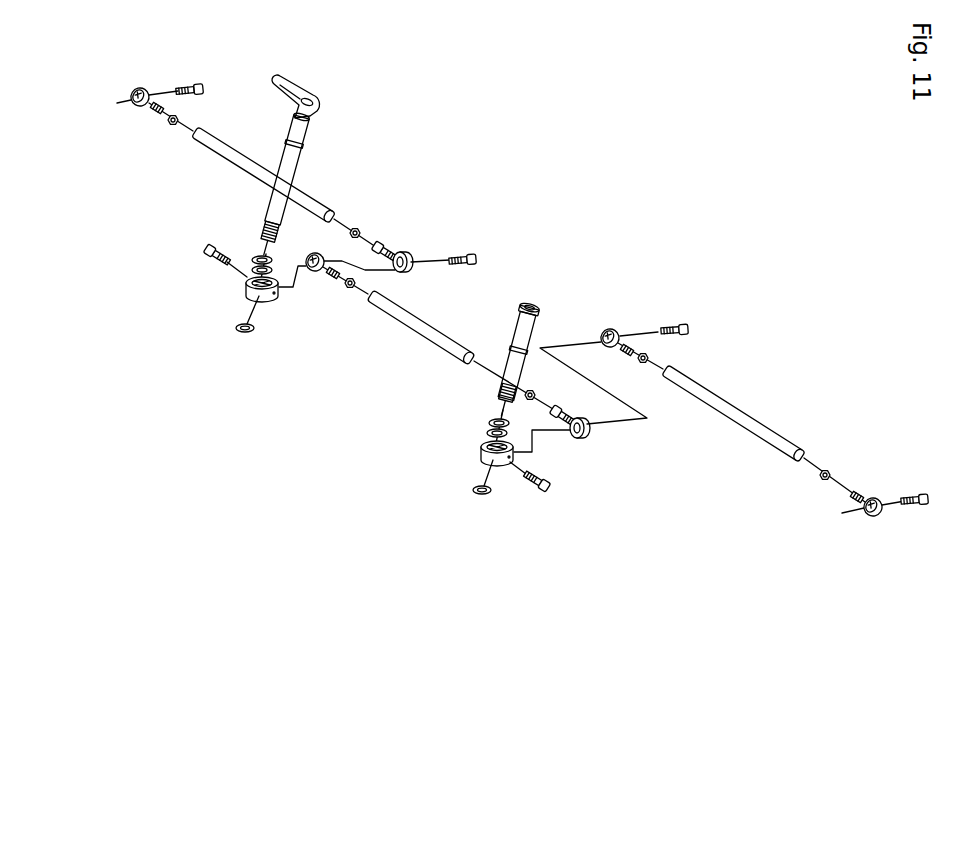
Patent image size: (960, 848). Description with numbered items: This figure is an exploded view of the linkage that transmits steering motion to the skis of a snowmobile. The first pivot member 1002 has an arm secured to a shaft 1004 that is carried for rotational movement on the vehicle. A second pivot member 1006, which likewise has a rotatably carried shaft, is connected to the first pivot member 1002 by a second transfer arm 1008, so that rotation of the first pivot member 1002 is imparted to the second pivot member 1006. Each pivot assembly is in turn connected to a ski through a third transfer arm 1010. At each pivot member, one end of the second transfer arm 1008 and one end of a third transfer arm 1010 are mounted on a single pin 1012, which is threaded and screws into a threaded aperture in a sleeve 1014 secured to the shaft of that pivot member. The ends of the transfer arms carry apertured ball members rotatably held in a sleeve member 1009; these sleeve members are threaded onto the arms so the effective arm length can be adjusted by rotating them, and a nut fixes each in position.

The first pivot member 1002 is at (314, 99).
The shaft 1004 is at (301, 181).
The second pivot member 1006 is at (535, 322).
The second transfer arm 1008 is at (420, 336).
The sleeve member 1009 is at (598, 470).
The third transfer arm 1010 is at (226, 158).
The pin 1012 is at (684, 322).
The sleeve 1014 is at (482, 453).